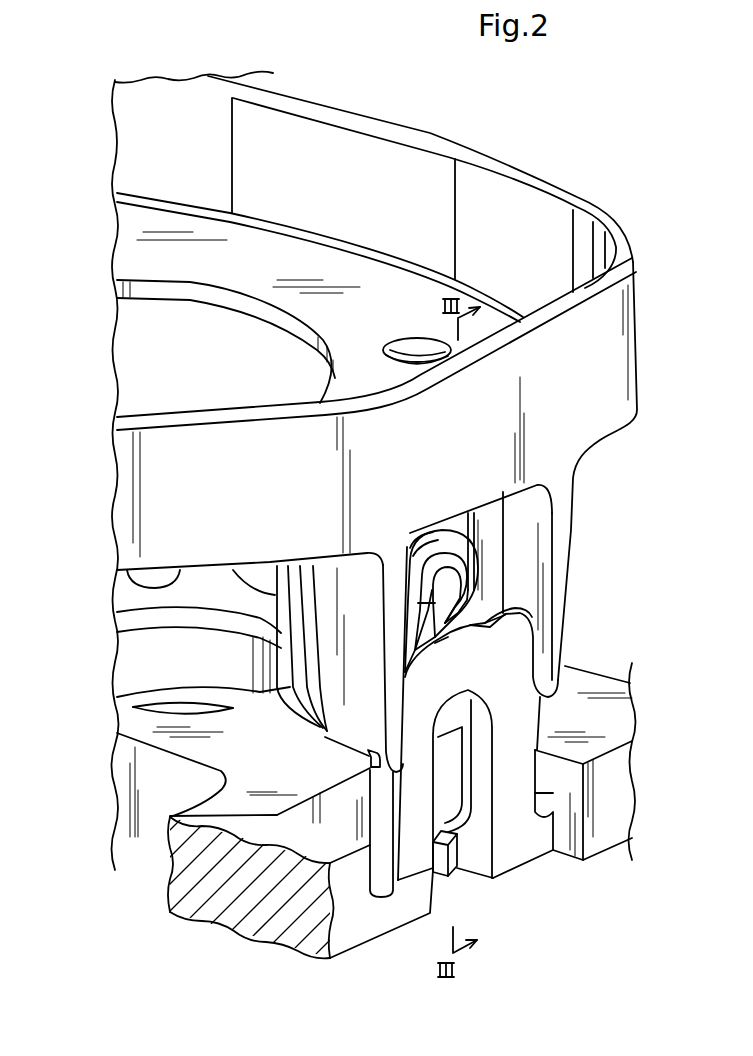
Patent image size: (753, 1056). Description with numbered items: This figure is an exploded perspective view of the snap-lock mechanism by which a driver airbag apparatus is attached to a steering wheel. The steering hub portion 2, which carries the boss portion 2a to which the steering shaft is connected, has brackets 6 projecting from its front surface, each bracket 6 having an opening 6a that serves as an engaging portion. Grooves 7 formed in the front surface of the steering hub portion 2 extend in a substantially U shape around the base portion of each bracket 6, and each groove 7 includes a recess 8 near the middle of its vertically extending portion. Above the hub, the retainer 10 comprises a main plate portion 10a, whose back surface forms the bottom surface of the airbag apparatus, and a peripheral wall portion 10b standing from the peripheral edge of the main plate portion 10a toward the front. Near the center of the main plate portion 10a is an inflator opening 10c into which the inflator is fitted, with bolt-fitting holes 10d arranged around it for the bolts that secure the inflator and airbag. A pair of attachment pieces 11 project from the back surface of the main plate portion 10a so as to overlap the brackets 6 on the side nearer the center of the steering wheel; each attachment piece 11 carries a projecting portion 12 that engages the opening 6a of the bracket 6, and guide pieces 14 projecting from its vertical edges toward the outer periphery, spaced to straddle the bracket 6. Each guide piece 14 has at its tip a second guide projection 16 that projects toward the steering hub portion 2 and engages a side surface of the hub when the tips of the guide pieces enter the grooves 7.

The retainer 10 is at (487, 143).
The main plate portion 10a is at (123, 230).
The peripheral wall portion 10b is at (367, 122).
The inflator opening 10c is at (207, 300).
The bolt-fitting holes 10d is at (400, 343).
The projecting portion 12 is at (455, 560).
The guide pieces 14 is at (557, 562).
The second guide projection 16 is at (557, 686).
The steering hub portion 2 is at (613, 681).
The boss portion 2a is at (132, 648).
The brackets 6 is at (523, 718).
The opening 6a is at (483, 779).
The grooves 7 is at (336, 807).
The recess 8 is at (438, 862).
The attachment pieces 11 is at (280, 712).